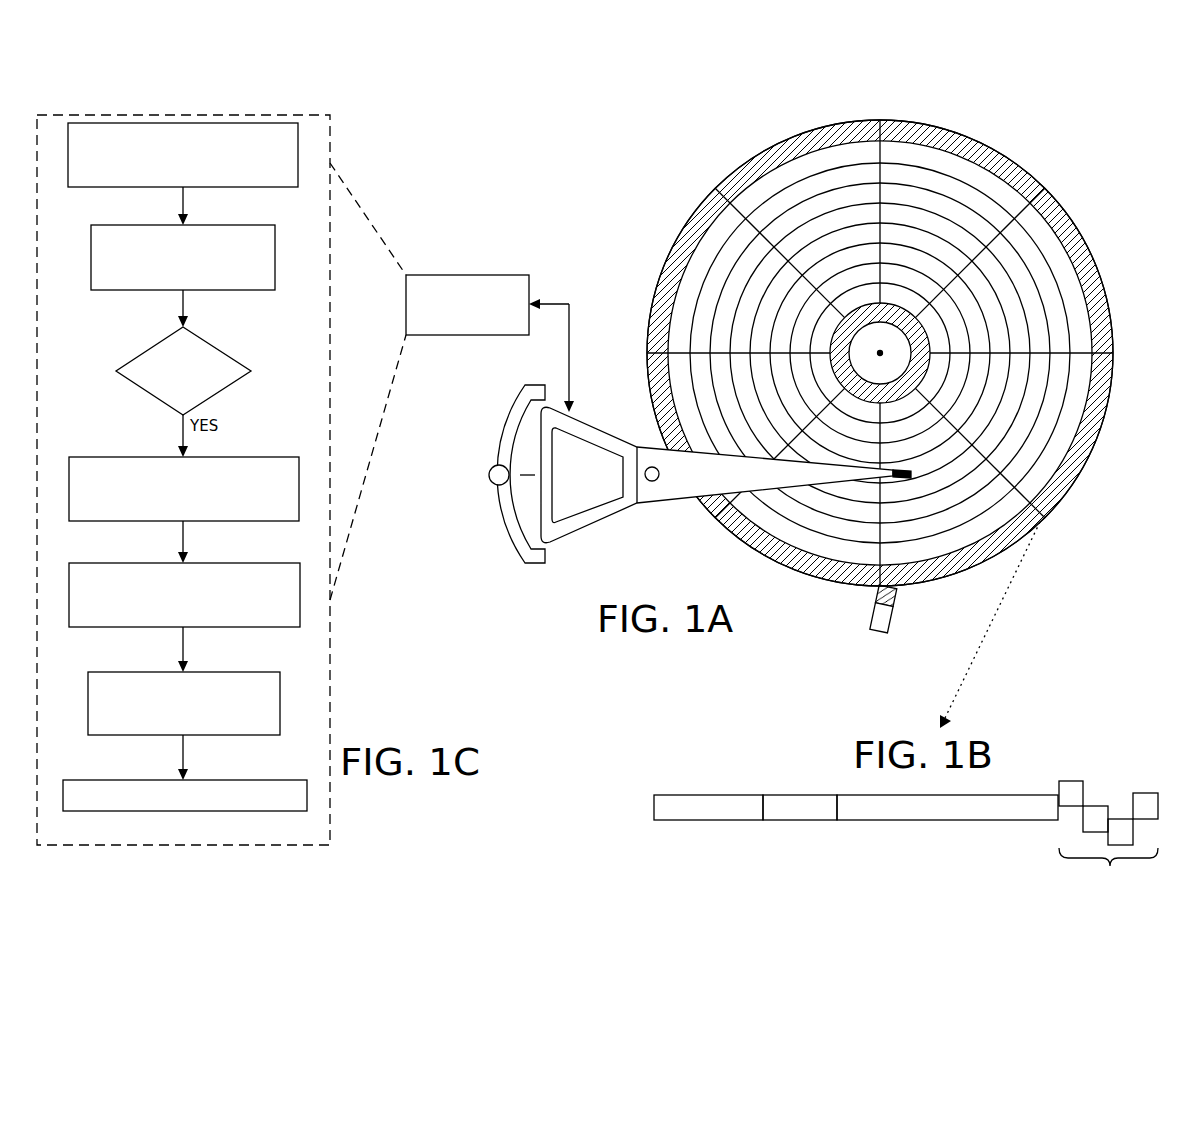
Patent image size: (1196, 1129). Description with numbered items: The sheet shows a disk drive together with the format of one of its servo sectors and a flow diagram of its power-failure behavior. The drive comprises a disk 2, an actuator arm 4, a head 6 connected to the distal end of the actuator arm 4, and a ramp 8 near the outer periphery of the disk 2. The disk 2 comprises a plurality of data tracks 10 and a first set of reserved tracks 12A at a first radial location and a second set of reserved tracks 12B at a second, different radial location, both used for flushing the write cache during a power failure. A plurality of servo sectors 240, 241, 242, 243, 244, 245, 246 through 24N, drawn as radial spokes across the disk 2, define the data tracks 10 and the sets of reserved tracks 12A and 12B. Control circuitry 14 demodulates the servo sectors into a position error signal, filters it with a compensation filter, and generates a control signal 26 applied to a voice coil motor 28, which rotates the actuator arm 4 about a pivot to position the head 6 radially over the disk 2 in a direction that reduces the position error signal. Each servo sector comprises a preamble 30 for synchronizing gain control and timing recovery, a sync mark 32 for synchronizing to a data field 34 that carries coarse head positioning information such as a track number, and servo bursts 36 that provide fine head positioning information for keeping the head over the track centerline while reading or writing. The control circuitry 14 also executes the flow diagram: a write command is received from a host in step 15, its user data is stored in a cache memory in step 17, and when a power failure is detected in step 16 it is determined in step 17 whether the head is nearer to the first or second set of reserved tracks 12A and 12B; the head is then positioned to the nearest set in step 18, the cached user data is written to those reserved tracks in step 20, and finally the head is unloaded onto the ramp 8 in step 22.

In FIG. 1A, the disk 2 is at (680, 175).
In FIG. 1A, the actuator arm 4 is at (645, 505).
In FIG. 1A, the head 6 is at (909, 456).
In FIG. 1A, the ramp 8 is at (896, 625).
In FIG. 1A, the data tracks 10 is at (1042, 272).
In FIG. 1A, the first set of reserved tracks 12A is at (772, 142).
In FIG. 1A, the second set of reserved tracks 12B is at (860, 296).
In FIG. 1A, the control circuitry 14 is at (468, 274).
In FIG. 1C, the receive write command step 15 is at (266, 188).
In FIG. 1C, the power failure detection step 16 is at (222, 392).
In FIG. 1C, the store user data / determine nearest reserved tracks step 17 is at (249, 290).
In FIG. 1C, the position head to nearest reserved tracks step 18 is at (262, 627).
In FIG. 1C, the write cached user data to reserved tracks step 20 is at (255, 735).
In FIG. 1C, the unload head onto ramp step 22 is at (268, 811).
In FIG. 1A, the servo sector 240 is at (882, 120).
In FIG. 1A, the servo sector 241 is at (1046, 190).
In FIG. 1A, the servo sector 242 is at (1112, 356).
In FIG. 1A, the servo sector 243 is at (1046, 519).
In FIG. 1A, the servo sector 244 is at (880, 588).
In FIG. 1A, the servo sector 245 is at (726, 519).
In FIG. 1A, the servo sector 246 is at (648, 353).
In FIG. 1A, the servo sector 24N is at (721, 186).
In FIG. 1A, the control signal 26 is at (569, 356).
In FIG. 1A, the voice coil motor 28 is at (576, 546).
In FIG. 1B, the preamble 30 is at (700, 820).
In FIG. 1B, the sync mark 32 is at (797, 820).
In FIG. 1B, the data field 34 is at (945, 820).
In FIG. 1B, the servo bursts 36 is at (1126, 776).